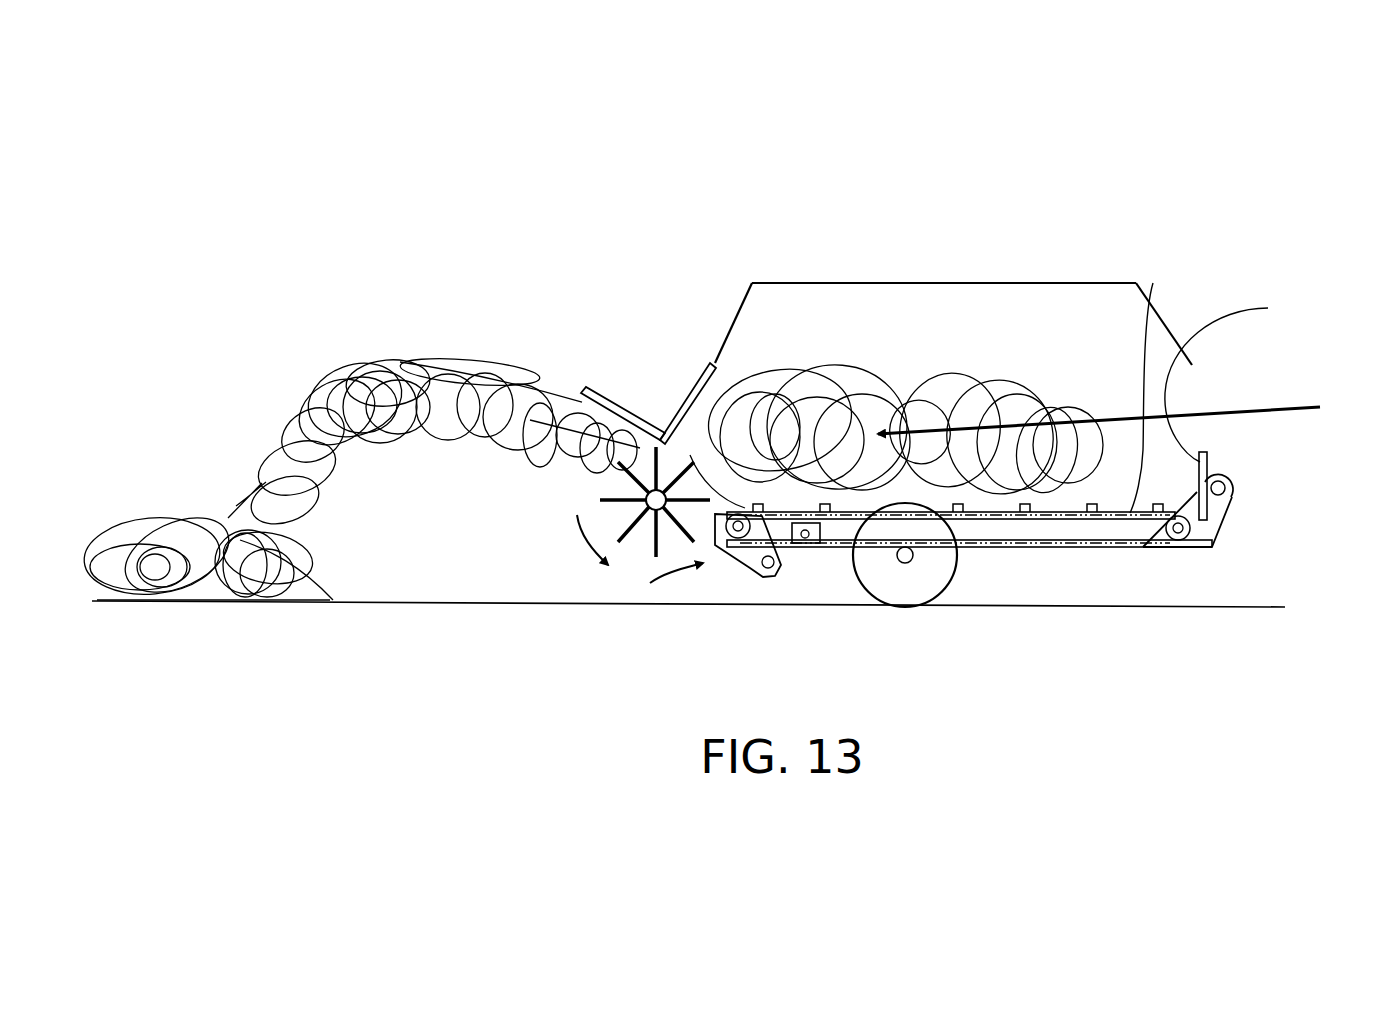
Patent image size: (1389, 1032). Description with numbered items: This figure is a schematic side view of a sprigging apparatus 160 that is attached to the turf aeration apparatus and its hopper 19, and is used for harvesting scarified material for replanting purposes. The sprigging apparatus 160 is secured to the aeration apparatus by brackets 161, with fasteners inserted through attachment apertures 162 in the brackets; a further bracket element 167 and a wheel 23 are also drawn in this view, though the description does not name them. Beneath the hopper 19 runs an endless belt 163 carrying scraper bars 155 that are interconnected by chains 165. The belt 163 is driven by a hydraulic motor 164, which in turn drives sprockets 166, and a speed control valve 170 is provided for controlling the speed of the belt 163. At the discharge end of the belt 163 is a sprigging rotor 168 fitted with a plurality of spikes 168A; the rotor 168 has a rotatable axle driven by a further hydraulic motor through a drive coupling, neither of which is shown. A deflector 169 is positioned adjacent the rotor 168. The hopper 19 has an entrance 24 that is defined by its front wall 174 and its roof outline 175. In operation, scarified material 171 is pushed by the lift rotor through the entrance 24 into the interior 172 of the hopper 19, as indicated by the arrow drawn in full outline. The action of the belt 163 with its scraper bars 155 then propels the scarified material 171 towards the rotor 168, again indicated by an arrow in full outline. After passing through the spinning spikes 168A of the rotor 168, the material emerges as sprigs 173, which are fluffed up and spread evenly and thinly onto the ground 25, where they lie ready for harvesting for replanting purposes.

The hopper 19 is at (1040, 275).
The roof outline 175 is at (838, 281).
The interior 172 is at (900, 310).
The chains 165 is at (1153, 283).
The front wall 174 is at (1241, 376).
The entrance 24 is at (1224, 388).
The sprigging apparatus 160 is at (1229, 437).
The scarified material 171 is at (907, 365).
The sprigs 173 is at (347, 377).
The ground 25 is at (387, 603).
The deflector 169 is at (612, 400).
The sprockets 166 is at (667, 435).
The spikes 168A is at (610, 498).
The sprigging rotor 168 is at (636, 560).
The endless belt 163 is at (1052, 555).
The scraper bars 155 is at (1092, 519).
The hydraulic motor 164 is at (730, 550).
The speed control valve 170 is at (817, 534).
The wheel 23 is at (934, 572).
The rear conveyor roller 167 is at (1197, 527).
The brackets 161 is at (1197, 510).
The attachment apertures 162 is at (1226, 488).